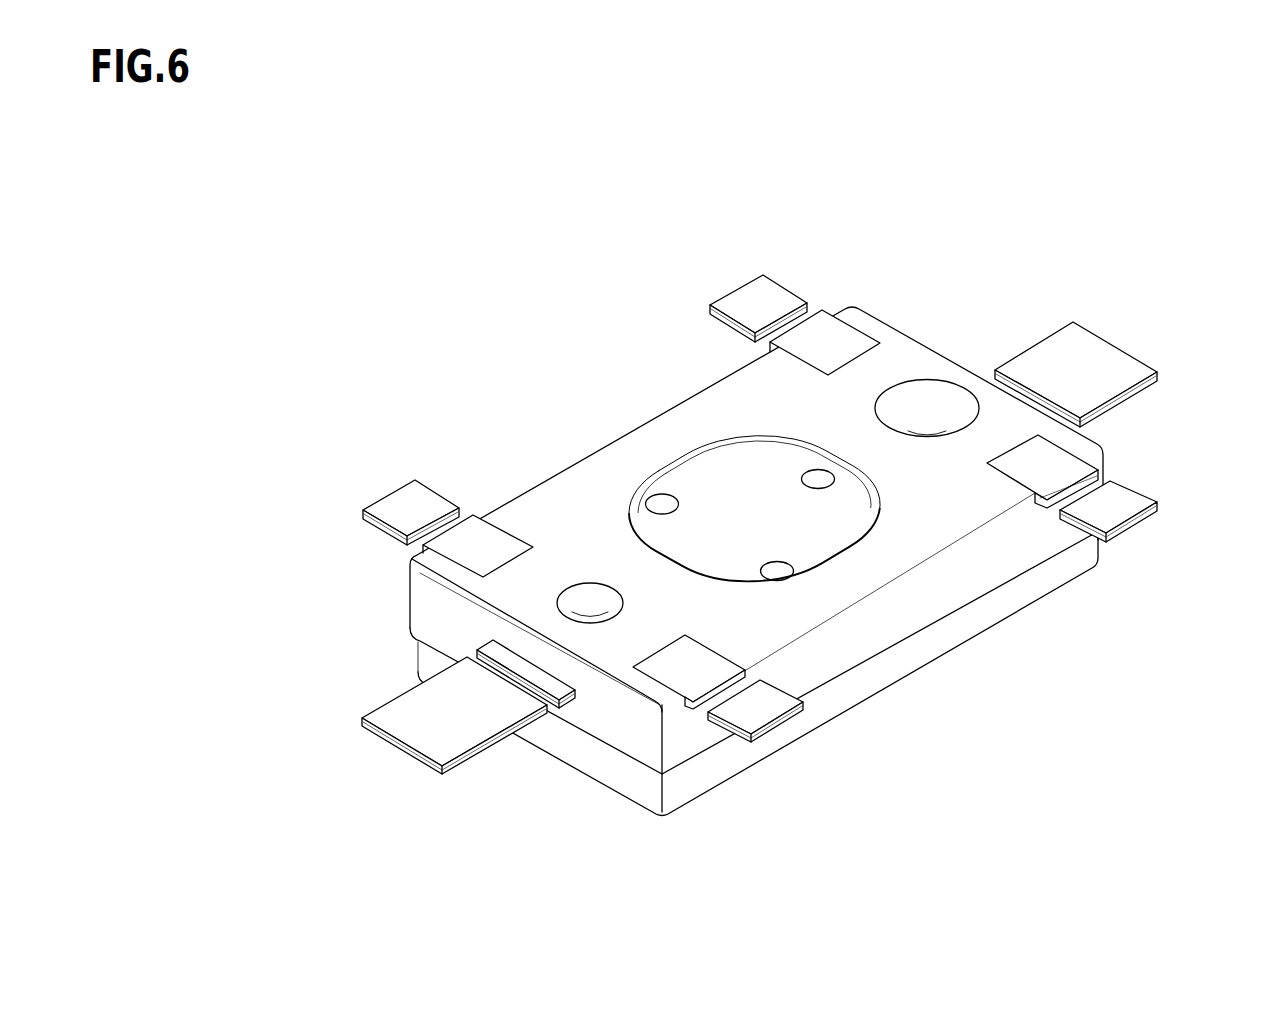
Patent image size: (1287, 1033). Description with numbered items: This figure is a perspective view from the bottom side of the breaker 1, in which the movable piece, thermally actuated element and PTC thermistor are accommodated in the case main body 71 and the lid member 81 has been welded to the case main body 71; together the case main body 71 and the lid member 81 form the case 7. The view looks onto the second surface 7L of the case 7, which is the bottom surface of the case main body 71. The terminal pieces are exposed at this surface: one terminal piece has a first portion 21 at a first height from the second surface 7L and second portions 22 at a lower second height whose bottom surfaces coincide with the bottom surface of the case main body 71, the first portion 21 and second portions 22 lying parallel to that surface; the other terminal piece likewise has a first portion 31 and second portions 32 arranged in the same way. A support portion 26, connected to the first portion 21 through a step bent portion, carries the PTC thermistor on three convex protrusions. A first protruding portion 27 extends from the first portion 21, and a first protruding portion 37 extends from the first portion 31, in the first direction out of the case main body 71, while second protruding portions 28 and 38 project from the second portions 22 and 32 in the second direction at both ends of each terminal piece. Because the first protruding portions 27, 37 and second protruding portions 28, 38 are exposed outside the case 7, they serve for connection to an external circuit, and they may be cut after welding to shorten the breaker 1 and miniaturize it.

The breaker 1 is at (1215, 234).
The case 7 is at (957, 577).
The second surface 7L is at (963, 506).
The first portion 21 is at (593, 588).
The second portions 22 is at (477, 545).
The support portion 26 is at (703, 478).
The first protruding portion 27 is at (498, 652).
The second protruding portions 28 is at (412, 508).
The first portion 31 is at (925, 434).
The second portions 32 is at (832, 347).
The first protruding portion 37 is at (1087, 362).
The second protruding portions 38 is at (758, 303).
The case main body 71 is at (732, 398).
The lid member 81 is at (725, 762).